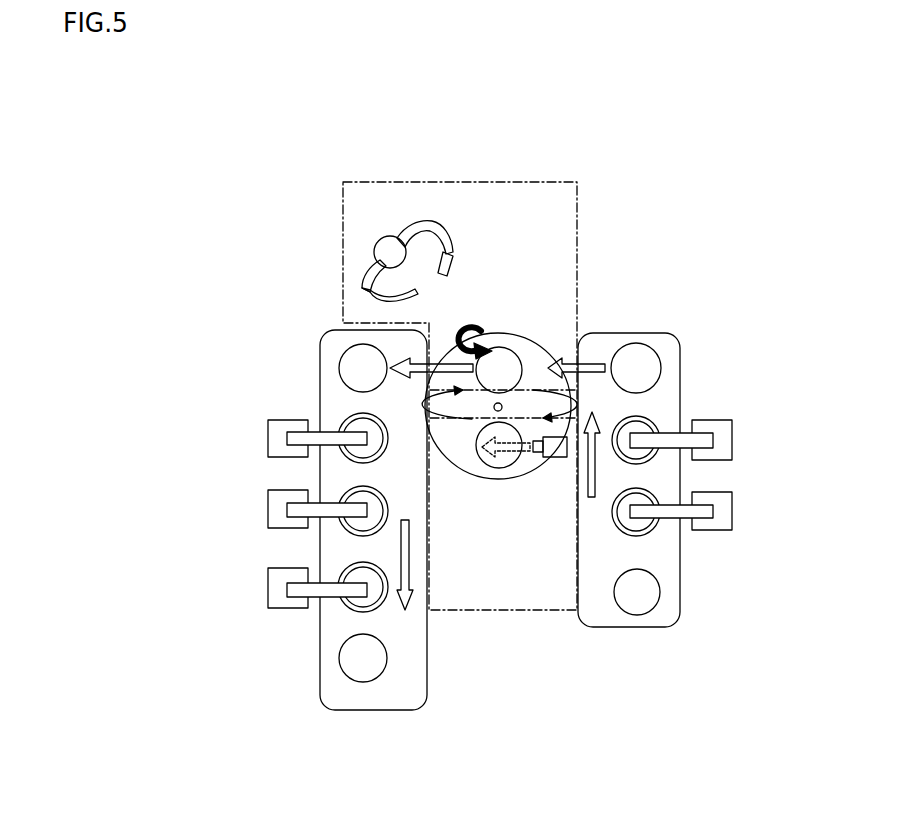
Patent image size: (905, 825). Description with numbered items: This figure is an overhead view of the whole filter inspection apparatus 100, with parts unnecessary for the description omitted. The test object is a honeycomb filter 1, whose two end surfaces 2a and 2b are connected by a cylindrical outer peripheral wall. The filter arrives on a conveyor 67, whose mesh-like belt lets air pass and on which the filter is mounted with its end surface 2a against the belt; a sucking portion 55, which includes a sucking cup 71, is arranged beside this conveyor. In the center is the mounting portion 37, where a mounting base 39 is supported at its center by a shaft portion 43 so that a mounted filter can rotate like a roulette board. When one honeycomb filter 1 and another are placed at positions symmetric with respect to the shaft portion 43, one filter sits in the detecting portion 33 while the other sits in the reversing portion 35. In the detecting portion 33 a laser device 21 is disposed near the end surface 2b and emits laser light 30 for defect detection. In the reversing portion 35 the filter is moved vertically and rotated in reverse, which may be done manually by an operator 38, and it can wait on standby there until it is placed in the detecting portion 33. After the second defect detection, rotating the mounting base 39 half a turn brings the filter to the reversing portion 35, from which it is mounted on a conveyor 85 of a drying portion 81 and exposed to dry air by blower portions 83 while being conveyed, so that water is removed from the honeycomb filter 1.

The inspection apparatus 100 is at (780, 46).
The reversing portion 35 is at (548, 182).
The operator 38 is at (386, 239).
The honeycomb filter 1 is at (512, 352).
The end surface 2a is at (498, 362).
The end surface 2b is at (480, 458).
The shaft portion 43 is at (503, 403).
The laser light 30 is at (510, 452).
The mounting base 39 is at (498, 468).
The mounting portion 37 is at (527, 476).
The laser device 21 is at (557, 458).
The detecting portion 33 is at (514, 612).
The sucking cup 71 is at (640, 428).
The sucking portion 55 is at (720, 445).
The conveyor 67 is at (595, 617).
The drying portion 81 is at (287, 520).
The blower portions 83 is at (269, 456).
The conveyor 85 is at (332, 632).